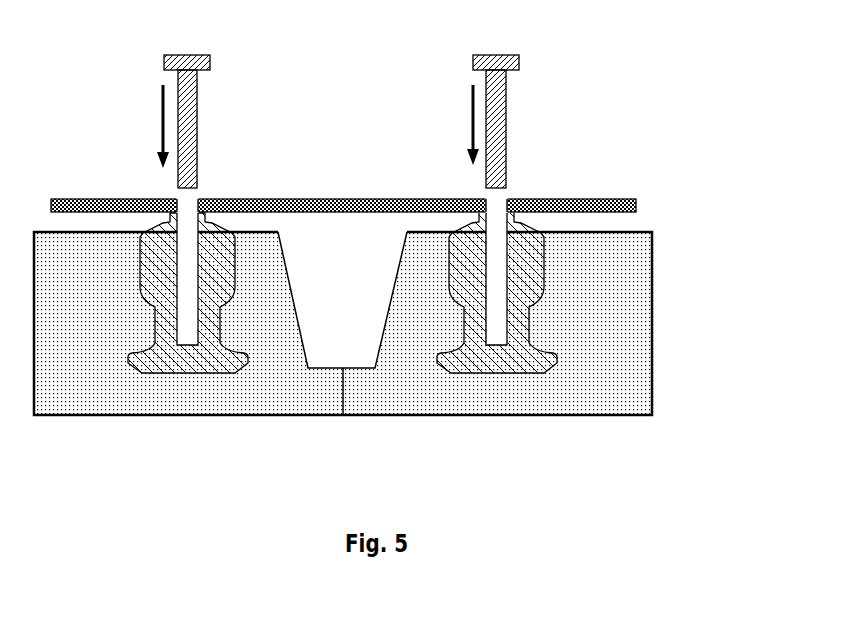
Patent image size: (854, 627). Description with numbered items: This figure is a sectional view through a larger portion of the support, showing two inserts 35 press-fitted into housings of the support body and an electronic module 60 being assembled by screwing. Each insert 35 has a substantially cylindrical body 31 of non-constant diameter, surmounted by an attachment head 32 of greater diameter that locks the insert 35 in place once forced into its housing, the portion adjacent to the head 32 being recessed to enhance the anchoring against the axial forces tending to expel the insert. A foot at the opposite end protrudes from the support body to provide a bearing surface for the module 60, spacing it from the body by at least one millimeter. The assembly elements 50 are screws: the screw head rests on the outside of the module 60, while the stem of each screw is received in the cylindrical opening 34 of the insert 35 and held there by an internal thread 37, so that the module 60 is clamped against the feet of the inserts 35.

The cylindrical body 31 is at (162, 244).
The attachment head 32 is at (548, 372).
The cylindrical opening 34 is at (495, 232).
The insert 35 is at (530, 260).
The internal thread 37 is at (496, 260).
The assembly element 50 is at (487, 95).
The electronic module 60 is at (625, 200).